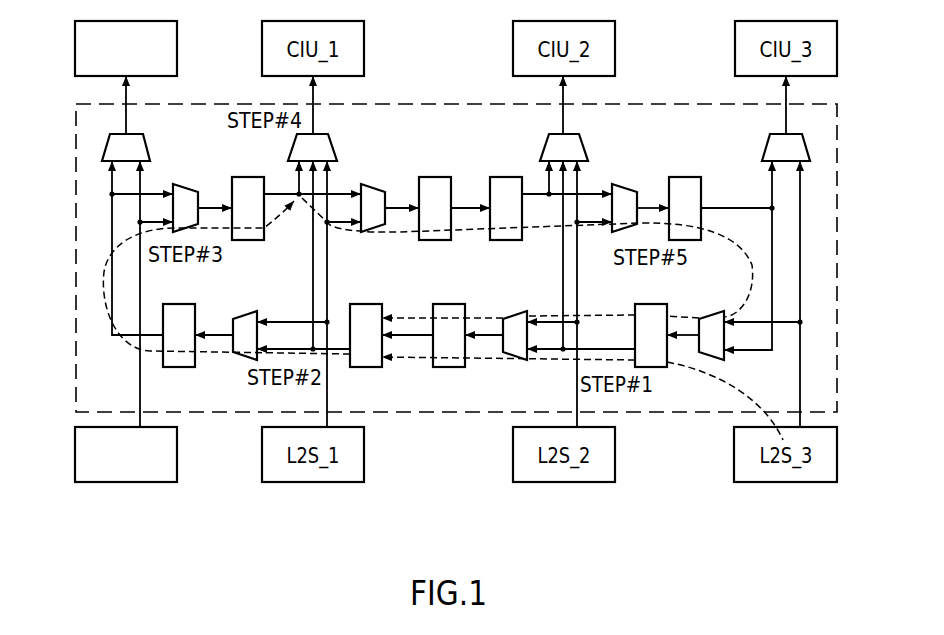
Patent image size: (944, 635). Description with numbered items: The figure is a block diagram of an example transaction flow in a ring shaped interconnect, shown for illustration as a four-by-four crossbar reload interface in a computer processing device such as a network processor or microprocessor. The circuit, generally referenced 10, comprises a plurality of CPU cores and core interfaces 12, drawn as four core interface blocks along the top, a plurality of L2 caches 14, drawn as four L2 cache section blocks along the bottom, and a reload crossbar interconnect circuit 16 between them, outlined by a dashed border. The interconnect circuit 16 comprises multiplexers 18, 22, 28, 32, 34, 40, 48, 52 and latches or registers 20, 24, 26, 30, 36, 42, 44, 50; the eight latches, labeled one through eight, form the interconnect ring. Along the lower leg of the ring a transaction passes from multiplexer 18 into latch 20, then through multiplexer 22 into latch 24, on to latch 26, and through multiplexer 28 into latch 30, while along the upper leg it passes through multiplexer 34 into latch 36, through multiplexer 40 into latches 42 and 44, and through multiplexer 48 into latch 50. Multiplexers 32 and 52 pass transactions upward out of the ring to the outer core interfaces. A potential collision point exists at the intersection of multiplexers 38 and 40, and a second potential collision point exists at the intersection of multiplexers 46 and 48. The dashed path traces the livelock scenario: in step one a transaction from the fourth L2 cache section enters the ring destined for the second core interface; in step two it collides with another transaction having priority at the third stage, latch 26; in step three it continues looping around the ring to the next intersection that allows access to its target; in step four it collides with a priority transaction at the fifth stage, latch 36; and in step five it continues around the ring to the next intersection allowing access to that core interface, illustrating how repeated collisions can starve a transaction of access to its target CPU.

The circuit 10 is at (164, 516).
The CPU cores and core interfaces 12 is at (178, 51).
The L2 caches 14 is at (180, 453).
The reload crossbar interconnect circuit 16 is at (75, 355).
The multiplexer 18 is at (713, 311).
The latch 20 is at (652, 304).
The multiplexer 22 is at (515, 311).
The latch 24 is at (448, 304).
The latch 26 is at (367, 304).
The multiplexer 28 is at (240, 312).
The latch 30 is at (183, 304).
The multiplexer 32 is at (146, 142).
The multiplexer 34 is at (188, 184).
The latch 36 is at (250, 177).
The multiplexer 38 is at (288, 146).
The multiplexer 40 is at (379, 186).
The latch 42 is at (433, 177).
The latch 44 is at (502, 177).
The multiplexer 46 is at (540, 145).
The multiplexer 48 is at (627, 186).
The latch 50 is at (685, 177).
The multiplexer 52 is at (762, 146).